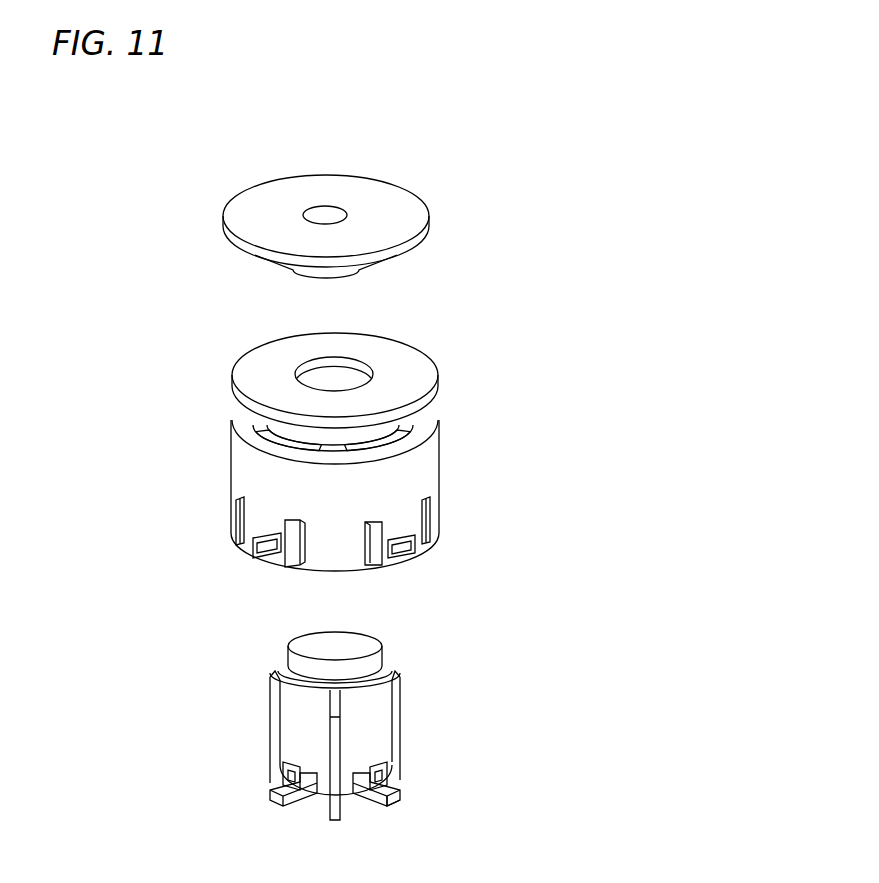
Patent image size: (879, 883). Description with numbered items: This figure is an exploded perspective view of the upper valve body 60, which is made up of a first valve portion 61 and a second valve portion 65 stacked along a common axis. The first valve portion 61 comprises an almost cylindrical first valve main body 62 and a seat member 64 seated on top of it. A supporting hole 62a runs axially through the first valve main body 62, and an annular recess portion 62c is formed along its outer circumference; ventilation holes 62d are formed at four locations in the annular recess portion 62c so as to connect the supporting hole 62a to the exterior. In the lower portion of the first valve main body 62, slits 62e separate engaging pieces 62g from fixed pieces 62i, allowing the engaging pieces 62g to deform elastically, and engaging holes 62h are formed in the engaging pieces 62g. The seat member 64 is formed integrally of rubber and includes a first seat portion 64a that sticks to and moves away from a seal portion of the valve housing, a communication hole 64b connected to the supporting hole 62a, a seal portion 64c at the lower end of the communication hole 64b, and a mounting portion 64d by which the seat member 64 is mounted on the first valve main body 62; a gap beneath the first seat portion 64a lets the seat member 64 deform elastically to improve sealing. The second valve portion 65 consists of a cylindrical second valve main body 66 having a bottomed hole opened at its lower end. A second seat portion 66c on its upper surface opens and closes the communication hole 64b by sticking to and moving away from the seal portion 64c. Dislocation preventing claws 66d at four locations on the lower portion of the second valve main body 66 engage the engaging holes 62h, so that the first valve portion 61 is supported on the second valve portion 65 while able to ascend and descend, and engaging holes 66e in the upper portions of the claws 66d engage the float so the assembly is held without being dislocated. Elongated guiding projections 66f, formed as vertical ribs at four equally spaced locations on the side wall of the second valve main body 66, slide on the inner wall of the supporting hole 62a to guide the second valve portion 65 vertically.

The upper valve body 60 is at (692, 330).
The first valve portion 61 is at (602, 215).
The first valve main body 62 is at (440, 455).
The supporting hole 62a is at (315, 367).
The annular recess portion 62c is at (246, 424).
The ventilation hole 62d is at (275, 440).
The slit 62e is at (435, 537).
The engaging piece 62g is at (408, 524).
The engaging hole 62h is at (415, 555).
The fixed piece 62i is at (338, 558).
The seat member 64 is at (430, 224).
The first seat portion 64a is at (395, 197).
The communication hole 64b is at (322, 214).
The seal portion 64c is at (328, 279).
The mounting portion 64d is at (287, 267).
The second valve portion 65 is at (400, 710).
The second valve main body 66 is at (270, 722).
The second seat portion 66c is at (362, 655).
The dislocation preventing claw 66d is at (400, 797).
The engaging hole 66e is at (383, 805).
The elongated guiding projection 66f is at (398, 748).